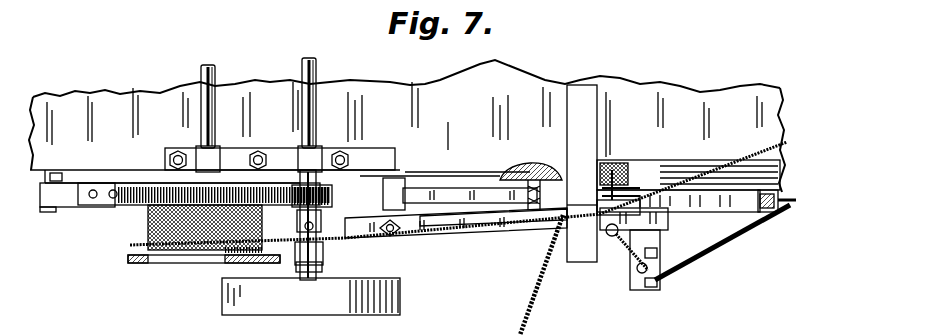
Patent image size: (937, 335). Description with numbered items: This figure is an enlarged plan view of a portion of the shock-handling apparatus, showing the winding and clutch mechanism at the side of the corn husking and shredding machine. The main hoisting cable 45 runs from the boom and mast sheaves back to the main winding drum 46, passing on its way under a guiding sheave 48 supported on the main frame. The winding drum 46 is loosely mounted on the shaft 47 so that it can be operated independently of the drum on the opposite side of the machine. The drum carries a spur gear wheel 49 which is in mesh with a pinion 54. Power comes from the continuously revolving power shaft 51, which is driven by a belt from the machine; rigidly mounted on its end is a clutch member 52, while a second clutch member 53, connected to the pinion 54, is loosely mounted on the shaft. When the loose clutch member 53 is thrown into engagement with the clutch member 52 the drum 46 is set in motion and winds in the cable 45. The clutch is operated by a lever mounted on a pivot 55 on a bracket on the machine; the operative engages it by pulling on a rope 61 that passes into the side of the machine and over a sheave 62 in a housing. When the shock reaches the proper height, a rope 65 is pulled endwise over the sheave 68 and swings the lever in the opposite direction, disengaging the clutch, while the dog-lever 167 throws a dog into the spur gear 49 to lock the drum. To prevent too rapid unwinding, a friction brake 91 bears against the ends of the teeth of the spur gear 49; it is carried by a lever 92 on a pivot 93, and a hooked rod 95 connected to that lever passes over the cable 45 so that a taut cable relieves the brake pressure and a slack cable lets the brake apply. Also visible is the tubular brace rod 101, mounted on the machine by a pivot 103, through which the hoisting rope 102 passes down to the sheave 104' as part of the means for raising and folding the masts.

The main hoisting cable 45 is at (468, 241).
The main winding drum 46 is at (175, 263).
The shaft 47 is at (211, 67).
The guiding sheave 48 is at (589, 236).
The spur gear wheel 49 is at (135, 206).
The power shaft 51 is at (309, 58).
The clutch member 52 is at (323, 265).
The clutch member 53 is at (293, 250).
The pinion 54 is at (293, 225).
The pivot 55 is at (397, 234).
The rope 61 is at (522, 316).
The sheave 62 is at (520, 170).
The rope 65 is at (722, 244).
The sheave 68 is at (660, 265).
The friction brake 91 is at (236, 186).
The lever 92 is at (420, 188).
The pivot 93 is at (346, 176).
The hooked rod 95 is at (500, 216).
The brace rod 101 is at (746, 200).
The hoisting rope 102 is at (632, 196).
The pivot 103 is at (605, 207).
The sheave 104' is at (688, 161).
The dog-lever 167 is at (73, 207).